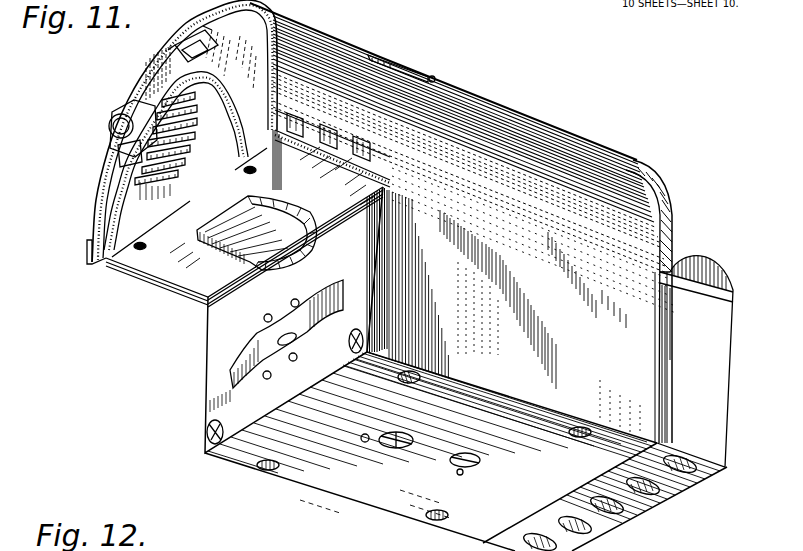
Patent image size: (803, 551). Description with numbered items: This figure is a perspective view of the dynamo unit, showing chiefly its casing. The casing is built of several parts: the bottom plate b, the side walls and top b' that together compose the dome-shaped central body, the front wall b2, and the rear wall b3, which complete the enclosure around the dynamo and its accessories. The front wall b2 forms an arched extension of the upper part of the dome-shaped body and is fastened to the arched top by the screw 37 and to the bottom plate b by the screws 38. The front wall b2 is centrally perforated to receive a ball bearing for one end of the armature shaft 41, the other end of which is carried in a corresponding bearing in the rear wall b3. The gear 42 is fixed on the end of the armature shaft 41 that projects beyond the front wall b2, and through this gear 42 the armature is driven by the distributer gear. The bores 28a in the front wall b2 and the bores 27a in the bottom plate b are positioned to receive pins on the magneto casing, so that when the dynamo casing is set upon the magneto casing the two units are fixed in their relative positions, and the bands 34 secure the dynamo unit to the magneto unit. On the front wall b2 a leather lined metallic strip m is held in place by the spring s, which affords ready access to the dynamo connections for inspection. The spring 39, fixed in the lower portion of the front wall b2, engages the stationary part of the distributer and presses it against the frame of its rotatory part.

The screw 37 is at (197, 44).
The armature shaft 41 is at (116, 127).
The gear 42 is at (177, 146).
The front wall b2 is at (257, 206).
The leather lined metallic strip m is at (332, 132).
The spring s is at (401, 63).
The side walls and top b' is at (512, 315).
The rear wall b3 is at (672, 217).
The bands 34 is at (728, 378).
The bores 28a is at (154, 250).
The spring 39 is at (286, 334).
The screws 38 is at (342, 353).
The bores 27a is at (455, 515).
The bottom plate b is at (516, 468).